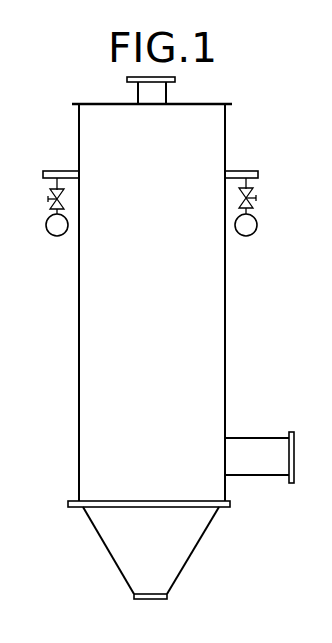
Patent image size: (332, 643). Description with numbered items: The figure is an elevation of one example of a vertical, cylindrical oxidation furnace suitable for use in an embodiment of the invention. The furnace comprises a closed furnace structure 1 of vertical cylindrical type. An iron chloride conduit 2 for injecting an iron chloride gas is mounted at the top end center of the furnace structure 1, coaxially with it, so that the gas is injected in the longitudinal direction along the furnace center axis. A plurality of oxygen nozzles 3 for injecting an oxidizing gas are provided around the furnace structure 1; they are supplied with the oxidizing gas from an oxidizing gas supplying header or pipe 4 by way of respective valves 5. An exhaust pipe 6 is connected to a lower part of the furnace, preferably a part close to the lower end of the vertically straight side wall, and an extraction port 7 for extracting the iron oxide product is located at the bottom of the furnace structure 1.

The furnace structure 1 is at (225, 339).
The iron chloride conduit 2 is at (167, 92).
The oxygen nozzles 3 is at (245, 171).
The oxidizing gas supplying header or pipe 4 is at (255, 235).
The valves 5 is at (254, 197).
The exhaust pipe 6 is at (258, 475).
The extraction port 7 is at (158, 600).